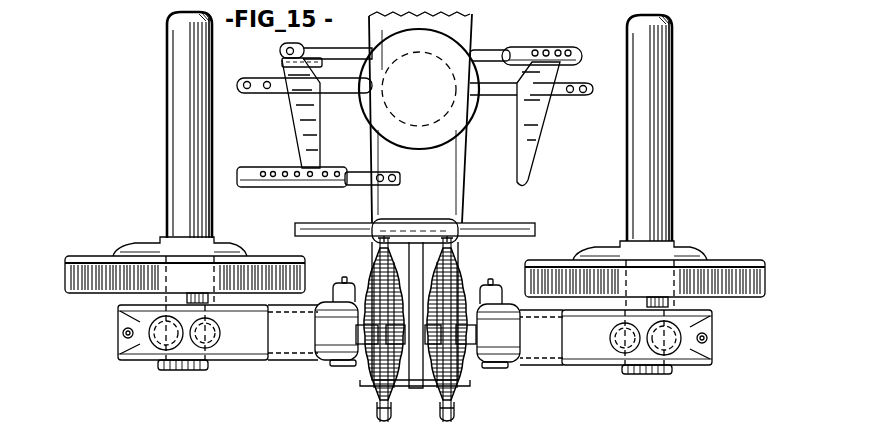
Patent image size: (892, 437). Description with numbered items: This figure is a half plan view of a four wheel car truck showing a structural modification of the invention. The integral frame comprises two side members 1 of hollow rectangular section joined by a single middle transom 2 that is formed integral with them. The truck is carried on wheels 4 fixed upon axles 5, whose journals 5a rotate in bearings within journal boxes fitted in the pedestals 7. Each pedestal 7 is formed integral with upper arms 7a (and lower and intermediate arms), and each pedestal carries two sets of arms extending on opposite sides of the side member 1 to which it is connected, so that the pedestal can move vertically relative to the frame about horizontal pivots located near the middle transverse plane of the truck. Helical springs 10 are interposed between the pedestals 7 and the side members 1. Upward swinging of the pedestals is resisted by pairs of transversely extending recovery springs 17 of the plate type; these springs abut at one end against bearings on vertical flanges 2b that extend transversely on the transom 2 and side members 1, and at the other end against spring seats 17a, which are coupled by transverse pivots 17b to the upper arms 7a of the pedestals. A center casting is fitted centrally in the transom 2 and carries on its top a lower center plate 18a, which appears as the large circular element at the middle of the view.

The side member 1 is at (415, 335).
The middle transom 2 is at (447, 182).
The vertical flange 2b is at (382, 262).
The wheel 4 is at (110, 257).
The axle 5 is at (183, 129).
The journal 5a is at (178, 370).
The pedestal 7 is at (118, 350).
The upper arm 7a is at (415, 335).
The helical spring 10 is at (208, 346).
The recovery spring 17 is at (372, 382).
The spring seat 17a is at (418, 319).
The transverse pivot 17b is at (345, 367).
The lower center plate 18a is at (419, 89).